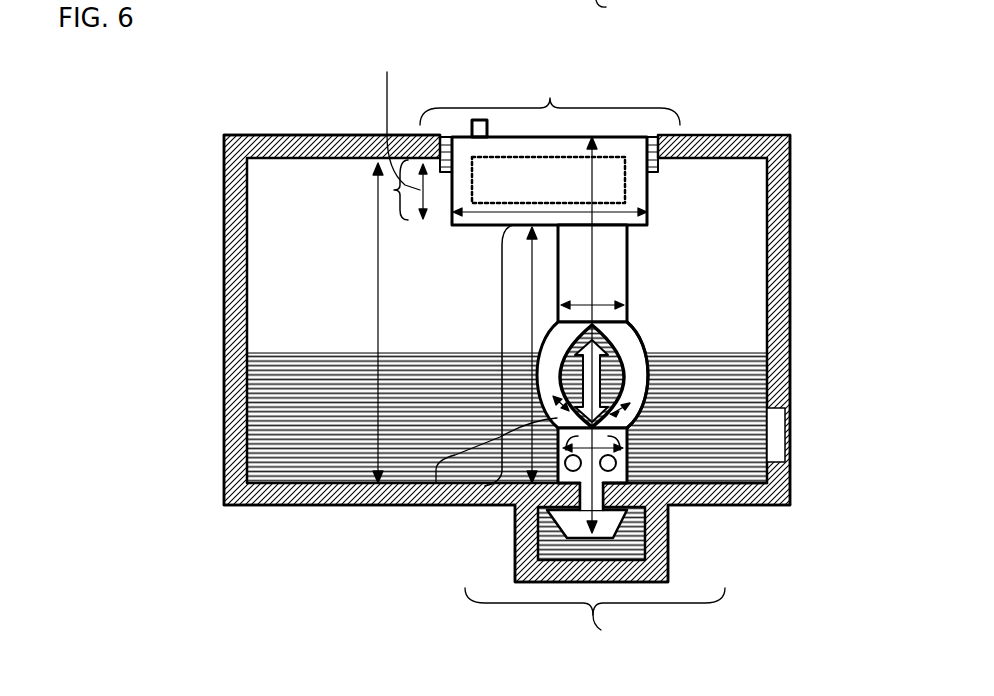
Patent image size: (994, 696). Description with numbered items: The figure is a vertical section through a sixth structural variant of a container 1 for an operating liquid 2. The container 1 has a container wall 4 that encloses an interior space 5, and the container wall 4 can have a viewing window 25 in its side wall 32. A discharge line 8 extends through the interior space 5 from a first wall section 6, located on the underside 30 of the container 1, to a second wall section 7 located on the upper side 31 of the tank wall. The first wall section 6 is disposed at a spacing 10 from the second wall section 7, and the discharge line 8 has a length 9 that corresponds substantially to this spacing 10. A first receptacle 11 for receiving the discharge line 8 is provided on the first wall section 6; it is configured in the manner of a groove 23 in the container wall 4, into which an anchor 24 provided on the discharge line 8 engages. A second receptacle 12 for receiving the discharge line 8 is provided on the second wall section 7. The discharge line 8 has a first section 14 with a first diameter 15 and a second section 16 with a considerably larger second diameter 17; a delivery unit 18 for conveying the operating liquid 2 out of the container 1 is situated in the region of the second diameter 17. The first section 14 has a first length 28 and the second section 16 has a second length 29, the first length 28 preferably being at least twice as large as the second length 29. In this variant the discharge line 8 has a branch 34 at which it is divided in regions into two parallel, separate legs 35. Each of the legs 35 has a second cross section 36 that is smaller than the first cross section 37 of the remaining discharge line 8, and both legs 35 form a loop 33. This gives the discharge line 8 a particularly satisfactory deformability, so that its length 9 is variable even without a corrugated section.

The container 1 is at (238, 99).
The operating liquid 2 is at (295, 373).
The container wall 4 is at (222, 262).
The interior space 5 is at (735, 230).
The first wall section 6 is at (595, 333).
The second wall section 7 is at (550, 97).
The discharge line 8 is at (613, 283).
The length 9 is at (593, 265).
The spacing 10 is at (377, 300).
The first receptacle 11 is at (670, 500).
The second receptacle 12 is at (659, 161).
The first section 14 is at (500, 353).
The first diameter 15 is at (633, 350).
The second section 16 is at (393, 190).
The second diameter 17 is at (493, 225).
The delivery unit 18 is at (630, 135).
The groove 23 is at (548, 523).
The anchor 24 is at (667, 557).
The viewing window 25 is at (780, 425).
The first length 28 is at (450, 497).
The second length 29 is at (391, 118).
The underside 30 is at (273, 506).
The upper side 31 is at (338, 135).
The side wall 32 is at (223, 366).
The loop 33 is at (557, 322).
The branch 34 is at (785, 378).
The legs 35 is at (533, 365).
The second cross section 36 is at (560, 404).
The first cross section 37 is at (477, 503).